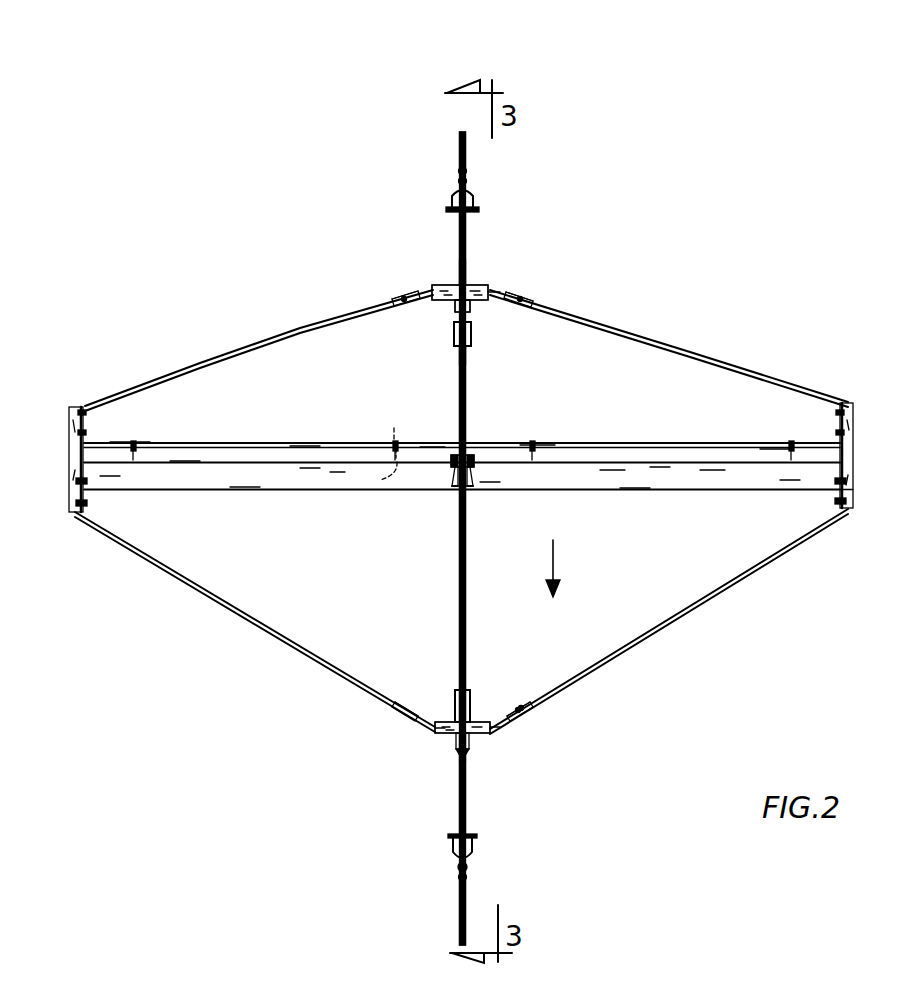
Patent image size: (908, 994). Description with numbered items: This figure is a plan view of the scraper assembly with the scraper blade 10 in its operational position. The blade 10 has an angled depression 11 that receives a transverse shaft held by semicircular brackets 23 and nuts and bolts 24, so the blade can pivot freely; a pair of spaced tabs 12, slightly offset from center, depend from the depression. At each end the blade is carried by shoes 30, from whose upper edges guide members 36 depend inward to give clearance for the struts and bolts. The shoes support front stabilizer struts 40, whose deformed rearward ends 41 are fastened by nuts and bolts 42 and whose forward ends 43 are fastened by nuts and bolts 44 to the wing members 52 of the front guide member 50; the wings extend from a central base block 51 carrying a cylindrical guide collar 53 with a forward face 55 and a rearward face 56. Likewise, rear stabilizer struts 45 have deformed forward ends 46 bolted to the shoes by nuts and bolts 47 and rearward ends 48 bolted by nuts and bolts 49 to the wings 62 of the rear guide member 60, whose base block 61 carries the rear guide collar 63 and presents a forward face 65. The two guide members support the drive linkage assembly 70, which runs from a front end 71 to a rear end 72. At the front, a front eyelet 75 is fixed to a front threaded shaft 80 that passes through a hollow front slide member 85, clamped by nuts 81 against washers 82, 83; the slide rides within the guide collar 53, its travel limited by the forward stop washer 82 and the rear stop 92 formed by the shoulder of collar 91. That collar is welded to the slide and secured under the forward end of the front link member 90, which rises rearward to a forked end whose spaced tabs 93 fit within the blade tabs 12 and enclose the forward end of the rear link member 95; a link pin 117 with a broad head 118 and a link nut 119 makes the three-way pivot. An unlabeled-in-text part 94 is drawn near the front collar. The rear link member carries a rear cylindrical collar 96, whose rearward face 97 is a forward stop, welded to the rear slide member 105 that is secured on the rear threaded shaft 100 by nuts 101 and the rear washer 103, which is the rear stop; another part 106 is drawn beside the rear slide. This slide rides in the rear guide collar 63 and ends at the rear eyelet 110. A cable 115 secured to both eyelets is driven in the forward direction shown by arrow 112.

The scraper blade 10 is at (278, 485).
The angled depression 11 is at (634, 452).
The spaced tabs 12 is at (454, 484).
The semicircular brackets 23 is at (393, 433).
The nuts and bolts 24 is at (372, 475).
The shoes 30 is at (72, 510).
The guide members 36 is at (840, 490).
The front stabilizer struts 40 is at (298, 596).
The deformed rearward ends 41 is at (78, 484).
The nuts and bolts 42 is at (88, 480).
The forward ends 43 is at (525, 714).
The nuts and bolts 44 is at (398, 702).
The rear stabilizer struts 45 is at (252, 338).
The deformed forward ends 46 is at (86, 420).
The nuts and bolts 47 is at (84, 433).
The rearward ends 48 is at (404, 292).
The nuts and bolts 49 is at (402, 298).
The front guide member 50 is at (500, 728).
The central base block 51 is at (440, 734).
The wing members 52 is at (406, 702).
The guide collar 53 is at (472, 724).
The forward face 55 is at (455, 740).
The rearward face 56 is at (471, 712).
The rear guide member 60 is at (498, 289).
The base block 61 is at (450, 288).
The wings 62 is at (410, 303).
The rear guide collar 63 is at (471, 306).
The forward face 65 is at (455, 308).
The drive linkage assembly 70 is at (454, 583).
The front end 71 is at (467, 867).
The rear end 72 is at (468, 187).
The front eyelet 75 is at (473, 845).
The front threaded shaft 80 is at (460, 798).
The nuts 81 is at (468, 700).
The washer (forward stop) 82 is at (470, 752).
The washer 83 is at (471, 700).
The front slide member 85 is at (470, 742).
The front link member 90 is at (466, 629).
The collar 91 is at (504, 708).
The rear stop 92 is at (455, 718).
The spaced tabs 93 is at (455, 488).
The lower sleeve wall 94 is at (456, 700).
The rear link member 95 is at (466, 411).
The rear cylindrical collar 96 is at (472, 340).
The rearward face (forward stop) 97 is at (454, 344).
The rear threaded shaft 100 is at (466, 240).
The nuts 101 is at (467, 280).
The rear washer (rear stop) 103 is at (478, 286).
The rear slide member 105 is at (454, 330).
The upper sleeve 106 is at (472, 330).
The rear eyelet 110 is at (475, 204).
The arrow 112 is at (554, 562).
The cable 115 is at (460, 150).
The link pin 117 is at (475, 462).
The broad head 118 is at (473, 456).
The link nut 119 is at (452, 456).